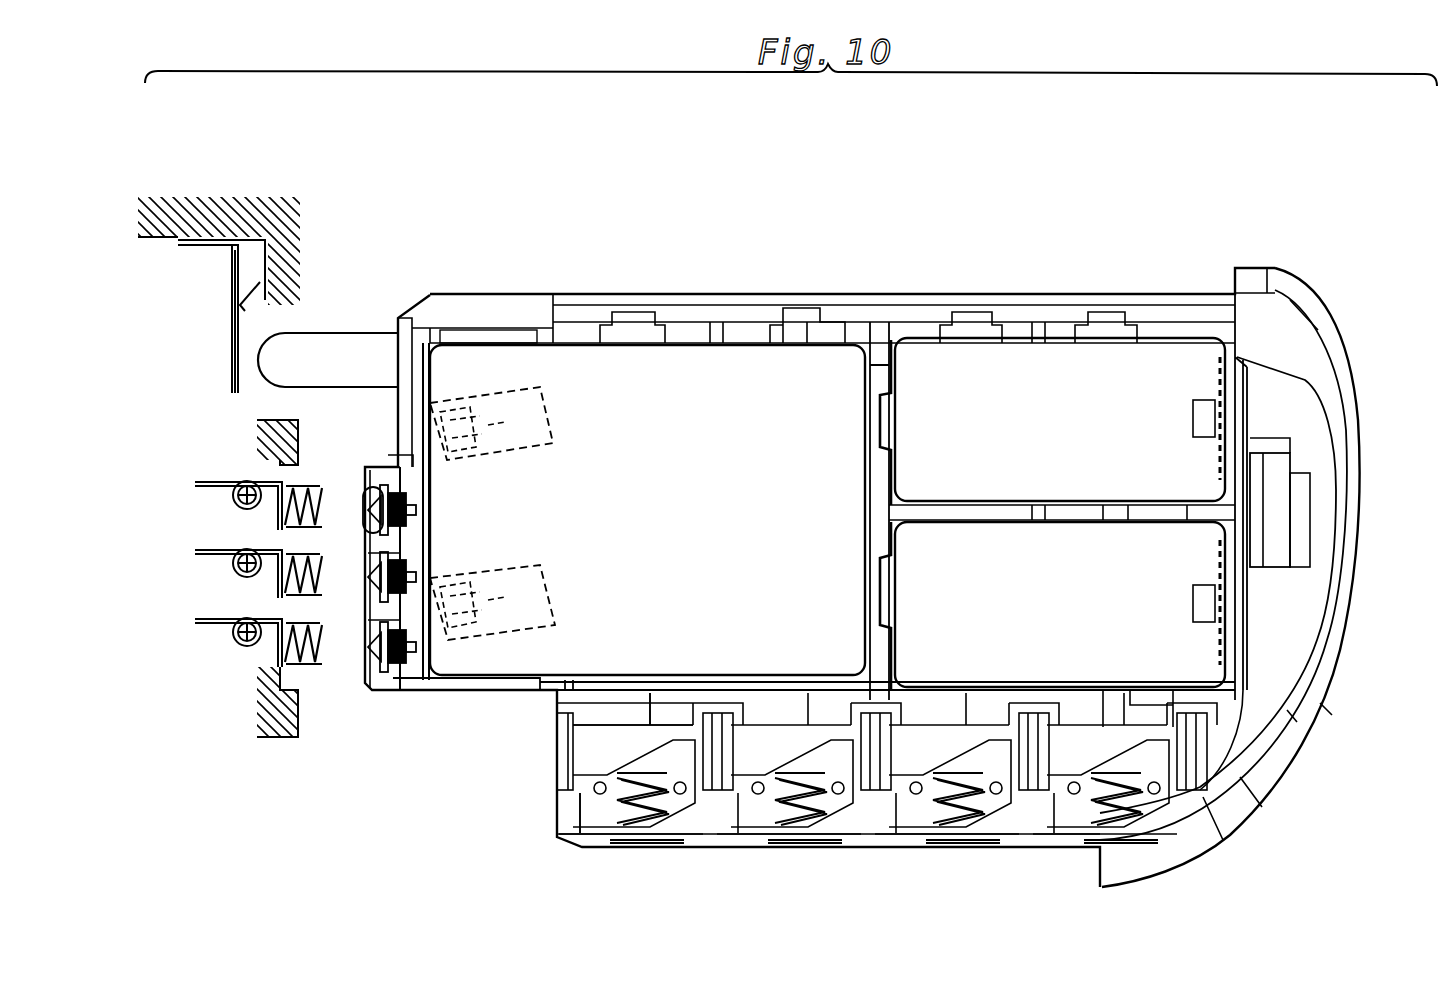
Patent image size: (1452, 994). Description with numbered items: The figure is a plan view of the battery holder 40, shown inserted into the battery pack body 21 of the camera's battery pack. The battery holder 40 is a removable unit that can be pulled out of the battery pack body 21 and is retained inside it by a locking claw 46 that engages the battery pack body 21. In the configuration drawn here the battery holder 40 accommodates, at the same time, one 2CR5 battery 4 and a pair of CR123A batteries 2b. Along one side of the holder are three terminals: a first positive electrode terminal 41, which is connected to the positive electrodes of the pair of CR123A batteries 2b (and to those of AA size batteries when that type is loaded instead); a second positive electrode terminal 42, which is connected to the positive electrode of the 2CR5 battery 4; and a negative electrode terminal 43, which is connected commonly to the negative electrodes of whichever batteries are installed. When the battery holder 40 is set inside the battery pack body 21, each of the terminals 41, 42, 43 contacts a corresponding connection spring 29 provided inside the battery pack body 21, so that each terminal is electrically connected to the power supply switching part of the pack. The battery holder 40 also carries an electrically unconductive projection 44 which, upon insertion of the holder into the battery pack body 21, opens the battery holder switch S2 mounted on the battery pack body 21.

The battery pack body 21 is at (258, 170).
The battery holder 40 is at (1262, 186).
The 2CR5 battery 4 is at (698, 372).
The CR123A batteries 2b is at (1043, 367).
The electrically unconductive projection 44 is at (338, 342).
The locking claw 46 is at (1280, 518).
The first positive electrode terminal 41 is at (372, 508).
The second positive electrode terminal 42 is at (372, 577).
The negative electrode terminal 43 is at (378, 650).
The connection spring 29 is at (300, 667).
The battery holder switch S2 is at (220, 338).